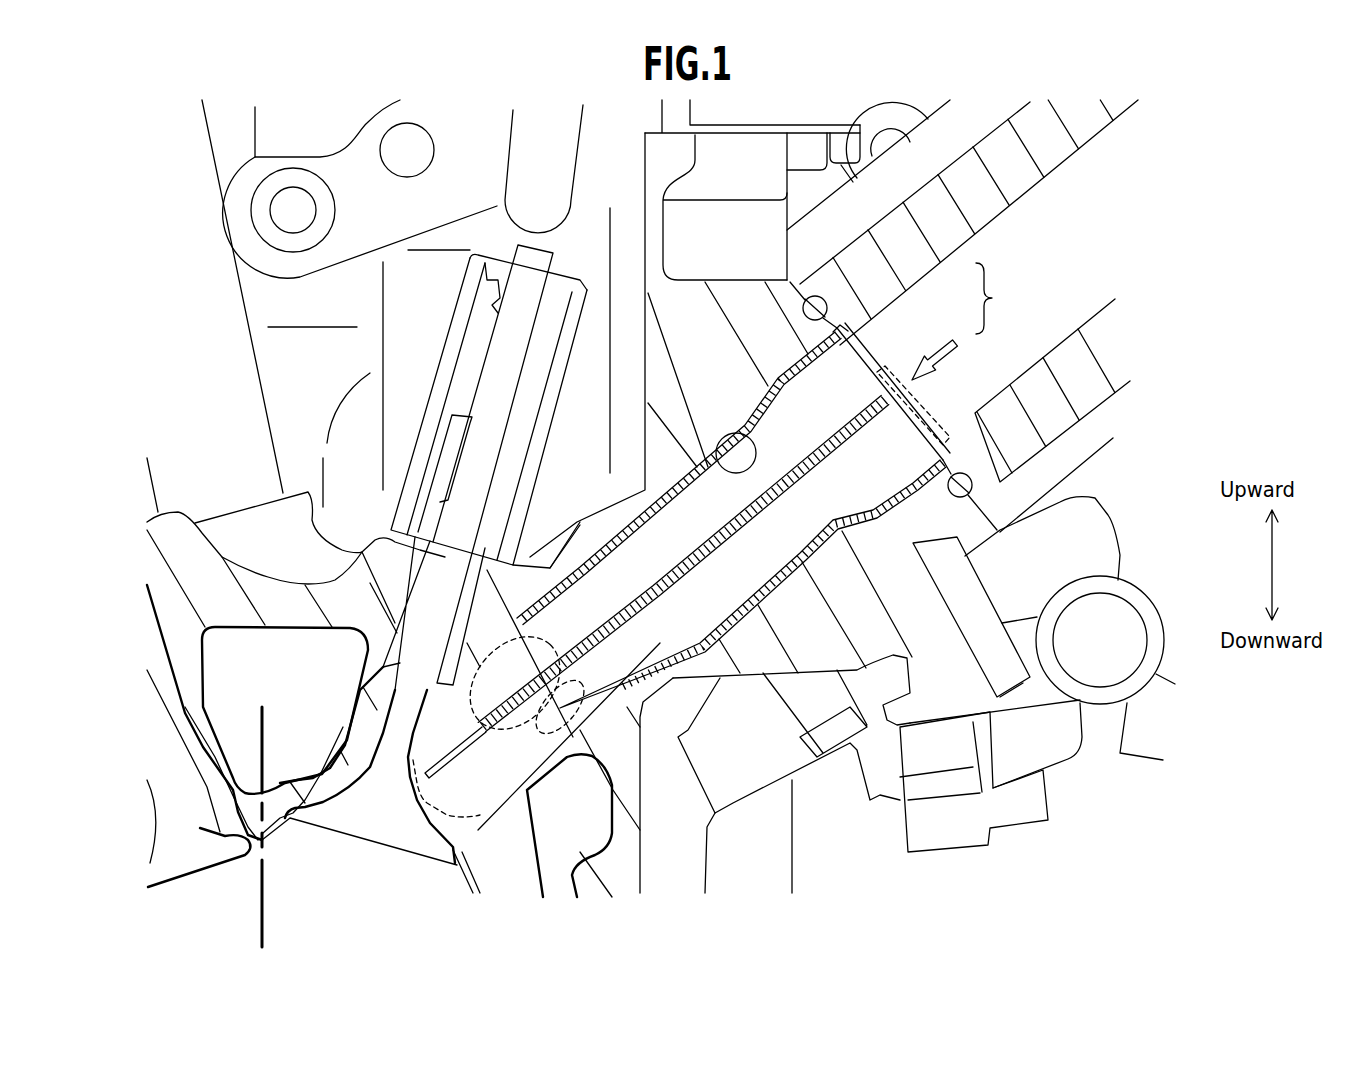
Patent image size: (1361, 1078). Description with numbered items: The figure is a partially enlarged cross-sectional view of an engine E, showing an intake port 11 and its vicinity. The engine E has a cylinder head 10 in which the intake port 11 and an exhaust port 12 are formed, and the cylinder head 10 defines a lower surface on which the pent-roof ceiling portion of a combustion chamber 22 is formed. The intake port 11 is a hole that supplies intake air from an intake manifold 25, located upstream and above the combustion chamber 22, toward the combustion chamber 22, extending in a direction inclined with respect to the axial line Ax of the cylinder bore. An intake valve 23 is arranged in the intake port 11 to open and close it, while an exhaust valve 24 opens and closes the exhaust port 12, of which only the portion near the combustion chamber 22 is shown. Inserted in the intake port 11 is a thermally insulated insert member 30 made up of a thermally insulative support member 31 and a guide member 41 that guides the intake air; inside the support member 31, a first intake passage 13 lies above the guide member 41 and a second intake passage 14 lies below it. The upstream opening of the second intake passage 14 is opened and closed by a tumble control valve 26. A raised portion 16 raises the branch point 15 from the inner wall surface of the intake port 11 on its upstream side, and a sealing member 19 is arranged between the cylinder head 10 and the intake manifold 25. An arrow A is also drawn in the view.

The cylinder head 10 is at (818, 643).
The intake port 11 is at (757, 437).
The exhaust port 12 is at (212, 813).
The first intake passage 13 is at (677, 558).
The second intake passage 14 is at (692, 619).
The branch point 15 is at (473, 783).
The raised portion 16 is at (532, 640).
The sealing member 19 is at (968, 473).
The combustion chamber 22 is at (342, 884).
The intake valve 23 is at (413, 842).
The exhaust valve 24 is at (182, 857).
The intake manifold 25 is at (985, 127).
The tumble control valve 26 is at (913, 393).
The thermally insulated insert member 30 is at (1004, 298).
The thermally insulative support member 31 is at (773, 390).
The guide member 41 is at (867, 428).
The insertion direction A is at (945, 347).
The engine E is at (857, 99).
The axial line Ax is at (263, 745).